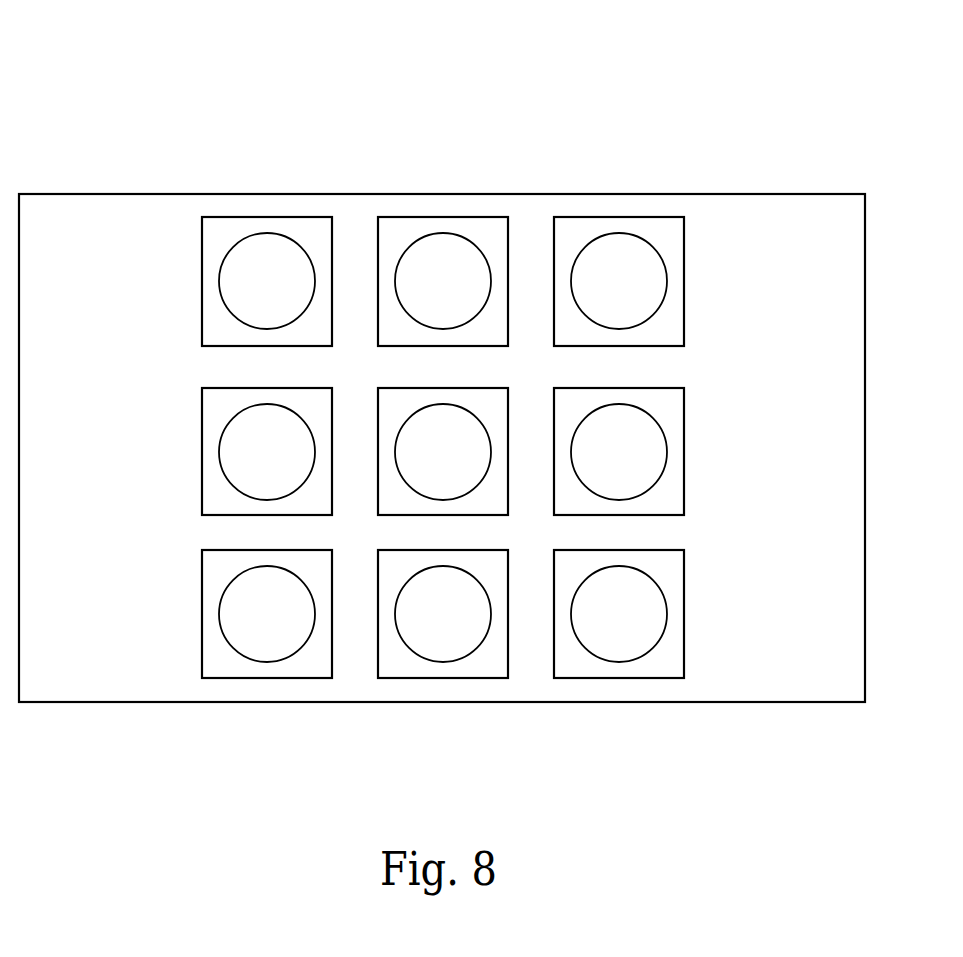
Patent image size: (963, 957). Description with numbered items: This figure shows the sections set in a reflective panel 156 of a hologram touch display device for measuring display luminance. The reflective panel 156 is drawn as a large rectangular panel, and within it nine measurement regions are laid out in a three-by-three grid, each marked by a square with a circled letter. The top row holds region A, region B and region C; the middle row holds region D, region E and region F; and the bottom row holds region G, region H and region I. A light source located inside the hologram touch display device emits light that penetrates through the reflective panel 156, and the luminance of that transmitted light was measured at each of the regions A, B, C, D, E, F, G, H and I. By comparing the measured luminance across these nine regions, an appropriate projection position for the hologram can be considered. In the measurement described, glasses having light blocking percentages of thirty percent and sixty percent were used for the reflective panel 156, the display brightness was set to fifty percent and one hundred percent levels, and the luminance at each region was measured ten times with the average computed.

The reflective panel 156 is at (125, 193).
The region A is at (267, 281).
The region B is at (443, 281).
The region C is at (619, 281).
The region D is at (267, 451).
The region E is at (443, 451).
The region F is at (619, 451).
The region G is at (267, 614).
The region H is at (443, 614).
The region I is at (619, 614).